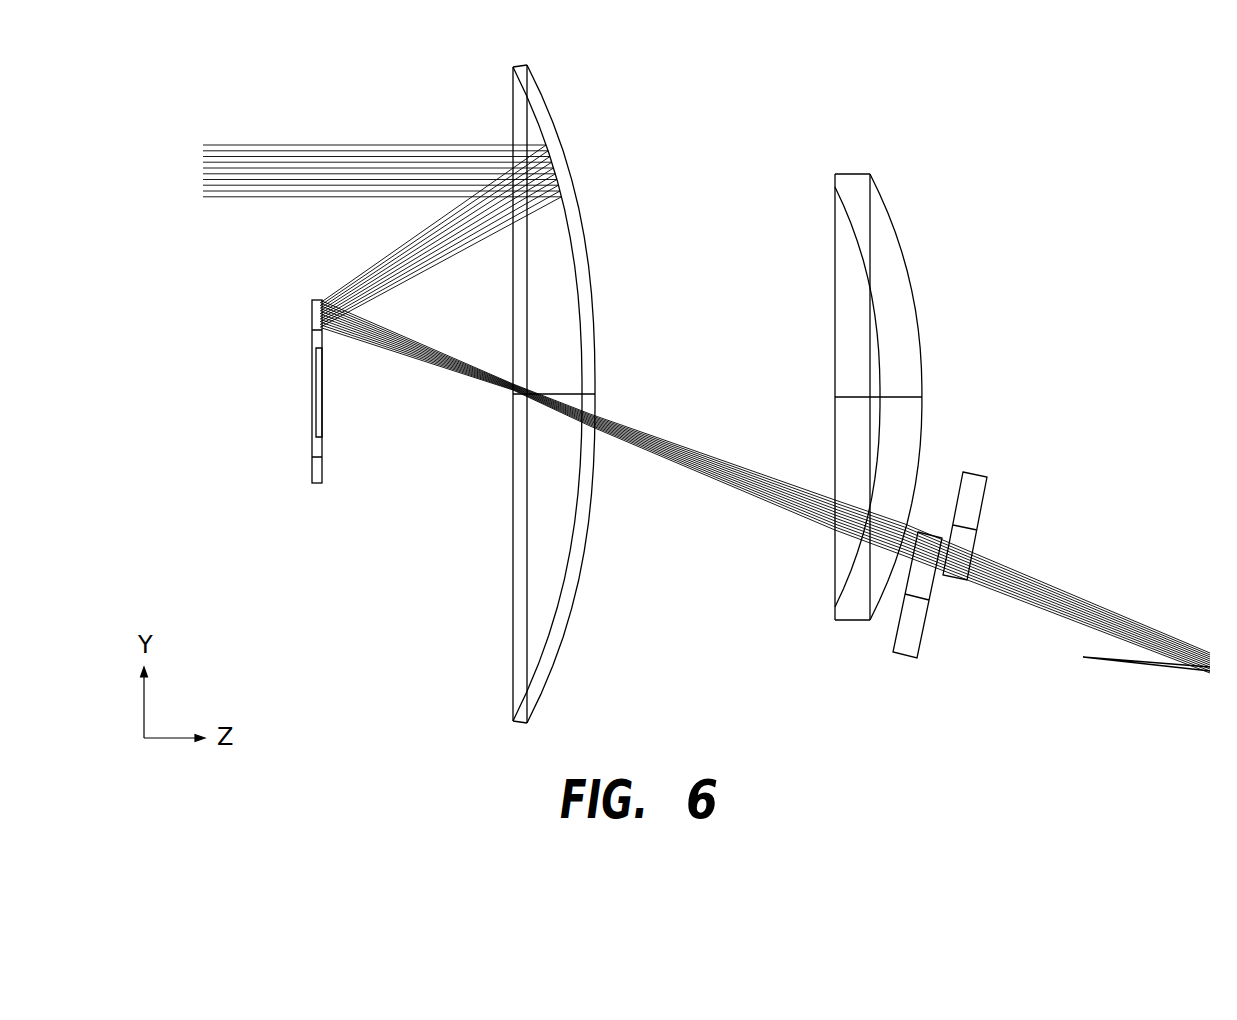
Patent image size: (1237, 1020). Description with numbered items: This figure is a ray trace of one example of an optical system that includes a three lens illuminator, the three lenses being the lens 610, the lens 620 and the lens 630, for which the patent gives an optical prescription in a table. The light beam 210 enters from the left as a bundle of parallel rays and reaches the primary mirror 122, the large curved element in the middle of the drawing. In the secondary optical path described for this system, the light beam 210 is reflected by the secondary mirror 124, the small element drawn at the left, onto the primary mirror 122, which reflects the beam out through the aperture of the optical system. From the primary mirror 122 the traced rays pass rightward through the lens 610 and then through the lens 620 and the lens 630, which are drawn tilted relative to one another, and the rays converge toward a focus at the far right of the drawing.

The light beam 210 is at (300, 143).
The primary mirror 122 is at (577, 188).
The secondary mirror 124 is at (317, 462).
The lens 610 is at (902, 255).
The lens 620 is at (922, 648).
The lens 630 is at (985, 476).